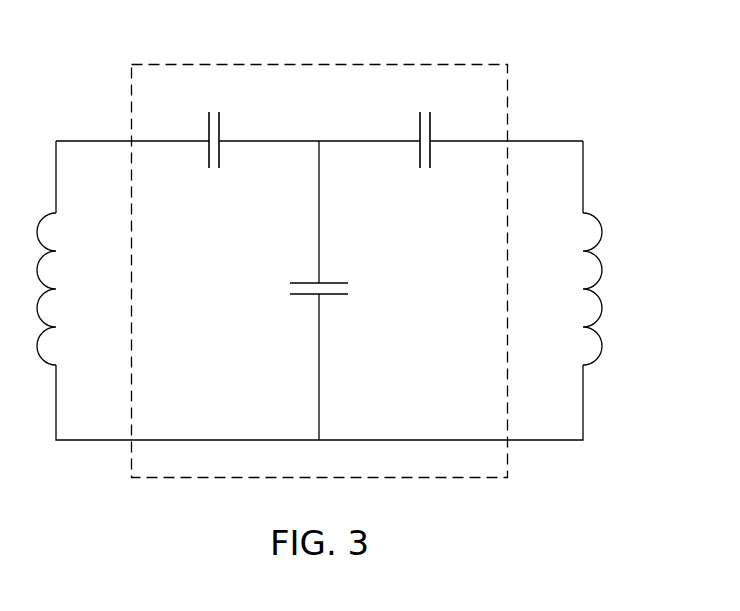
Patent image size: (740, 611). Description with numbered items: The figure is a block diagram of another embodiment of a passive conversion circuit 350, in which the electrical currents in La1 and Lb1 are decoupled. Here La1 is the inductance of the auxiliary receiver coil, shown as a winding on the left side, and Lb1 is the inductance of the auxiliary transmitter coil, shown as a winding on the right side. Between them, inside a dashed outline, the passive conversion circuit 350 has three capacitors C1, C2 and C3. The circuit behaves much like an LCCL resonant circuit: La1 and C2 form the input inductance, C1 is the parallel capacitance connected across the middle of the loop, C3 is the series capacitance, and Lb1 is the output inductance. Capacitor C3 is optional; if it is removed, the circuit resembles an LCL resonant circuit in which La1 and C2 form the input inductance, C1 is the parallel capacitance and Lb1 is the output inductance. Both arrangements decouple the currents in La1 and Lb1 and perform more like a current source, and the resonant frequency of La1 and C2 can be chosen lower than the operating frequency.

The passive conversion circuit 350 is at (320, 256).
The capacitor C1 is at (329, 274).
The capacitor C2 is at (232, 129).
The capacitor C3 is at (441, 129).
The inductance of the auxiliary receiver coil La1 is at (74, 289).
The inductance of the auxiliary transmitter coil Lb1 is at (619, 289).